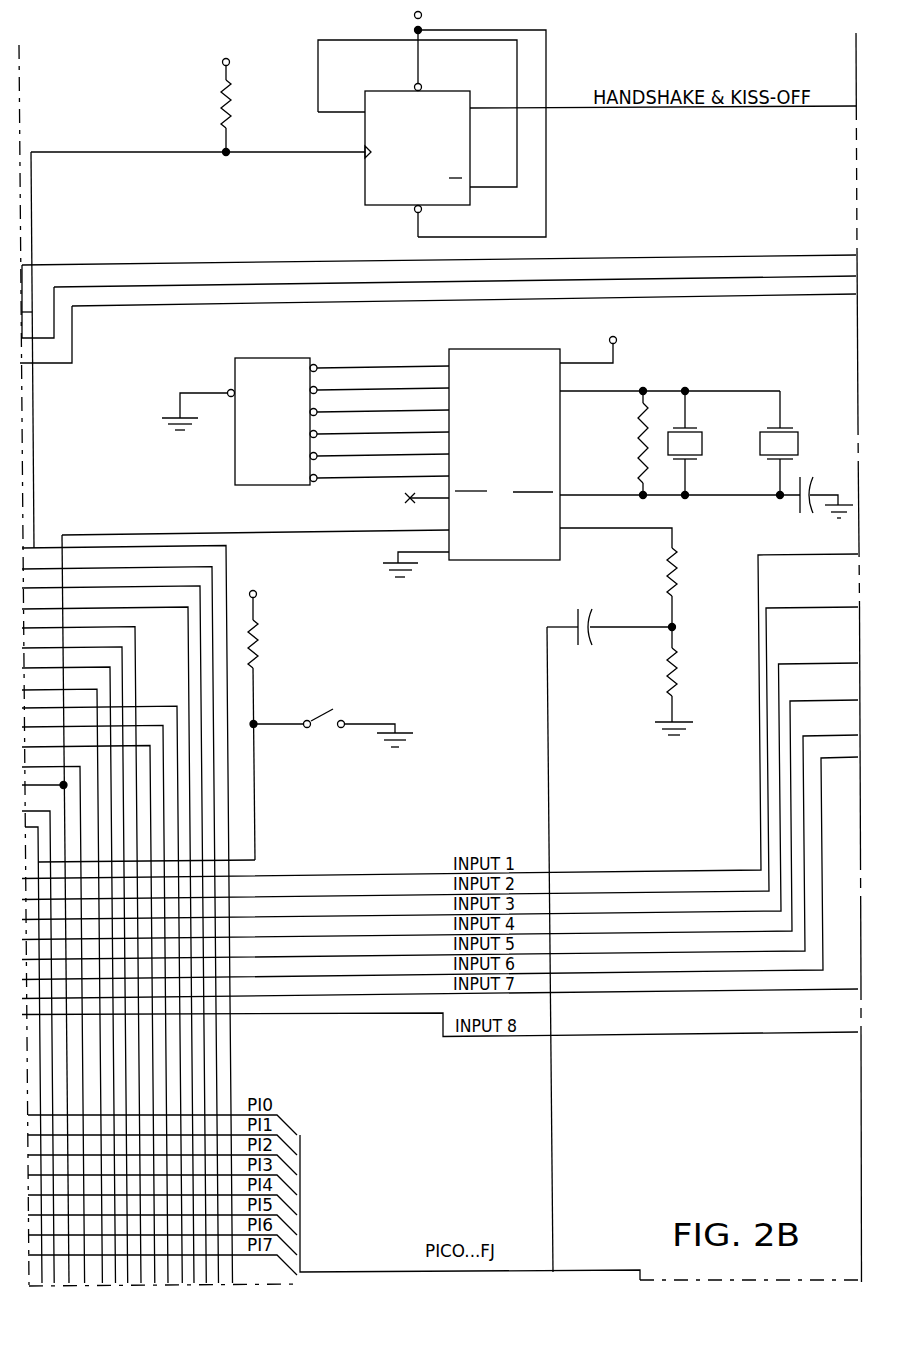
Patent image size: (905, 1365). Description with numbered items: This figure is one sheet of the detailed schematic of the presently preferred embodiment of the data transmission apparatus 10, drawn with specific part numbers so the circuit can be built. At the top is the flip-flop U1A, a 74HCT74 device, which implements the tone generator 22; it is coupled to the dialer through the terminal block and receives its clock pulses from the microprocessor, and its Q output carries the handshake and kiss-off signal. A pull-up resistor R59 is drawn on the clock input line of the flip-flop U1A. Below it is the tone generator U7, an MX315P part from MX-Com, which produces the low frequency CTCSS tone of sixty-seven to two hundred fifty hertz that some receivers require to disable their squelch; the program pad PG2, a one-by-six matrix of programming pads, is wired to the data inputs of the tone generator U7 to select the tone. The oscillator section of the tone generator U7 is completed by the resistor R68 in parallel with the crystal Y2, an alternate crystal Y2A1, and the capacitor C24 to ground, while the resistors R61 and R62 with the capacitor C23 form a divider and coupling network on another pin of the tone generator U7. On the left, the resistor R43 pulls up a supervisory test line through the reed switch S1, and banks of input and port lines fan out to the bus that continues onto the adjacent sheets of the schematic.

The data transmission apparatus 10 is at (598, 56).
The tone generator 22 is at (359, 212).
The flip-flop U1A is at (432, 121).
The tone generator U7 is at (509, 459).
The program pad PG2 is at (305, 431).
The resistor 100K R59 is at (214, 97).
The resistor 100K R43 is at (275, 711).
The reed switch (supervisory test) S1 is at (333, 716).
The resistor 1M R68 is at (627, 443).
The crystal 1MHz SMT Y2 is at (711, 443).
The crystal 1MHz Y2A1 is at (797, 437).
The capacitor 33pf C24 is at (822, 495).
The resistor 10K R61 is at (692, 598).
The resistor 10K R62 is at (687, 691).
The capacitor .1uf C23 is at (609, 627).